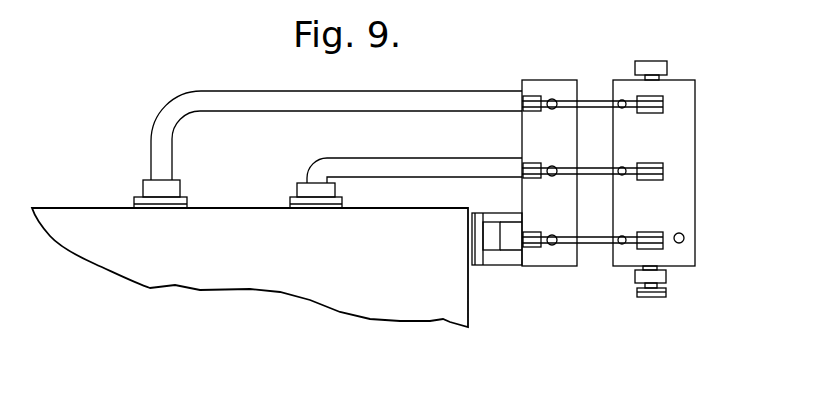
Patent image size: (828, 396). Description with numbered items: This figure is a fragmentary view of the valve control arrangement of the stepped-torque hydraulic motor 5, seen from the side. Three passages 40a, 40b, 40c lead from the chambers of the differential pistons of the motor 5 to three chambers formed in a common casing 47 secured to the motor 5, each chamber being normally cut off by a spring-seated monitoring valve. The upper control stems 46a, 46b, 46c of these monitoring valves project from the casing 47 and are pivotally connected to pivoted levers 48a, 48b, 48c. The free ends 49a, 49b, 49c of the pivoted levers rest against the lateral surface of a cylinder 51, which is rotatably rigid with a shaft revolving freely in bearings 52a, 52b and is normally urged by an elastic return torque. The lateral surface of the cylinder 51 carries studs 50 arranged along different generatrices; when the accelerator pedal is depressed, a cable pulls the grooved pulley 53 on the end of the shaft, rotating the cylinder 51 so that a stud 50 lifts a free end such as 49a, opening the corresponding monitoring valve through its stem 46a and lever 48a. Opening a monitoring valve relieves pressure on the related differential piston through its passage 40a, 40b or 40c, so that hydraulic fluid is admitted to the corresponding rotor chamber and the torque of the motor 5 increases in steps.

The hydraulic motor 5 is at (94, 205).
The passage 40a is at (505, 236).
The passage 40b is at (432, 166).
The passage 40c is at (413, 100).
The control stem 46a is at (551, 235).
The control stem 46b is at (551, 166).
The control stem 46c is at (550, 96).
The common casing 47 is at (528, 82).
The pivoted lever 48a is at (592, 237).
The pivoted lever 48b is at (591, 168).
The pivoted lever 48c is at (592, 101).
The free end of pivoted lever 49a is at (663, 248).
The free end of pivoted lever 49b is at (663, 180).
The free end of pivoted lever 49c is at (665, 115).
The stud 50 is at (684, 235).
The cylinder 51 is at (676, 90).
The bearing 52a is at (637, 280).
The bearing 52b is at (643, 62).
The grooved pulley 53 is at (648, 301).